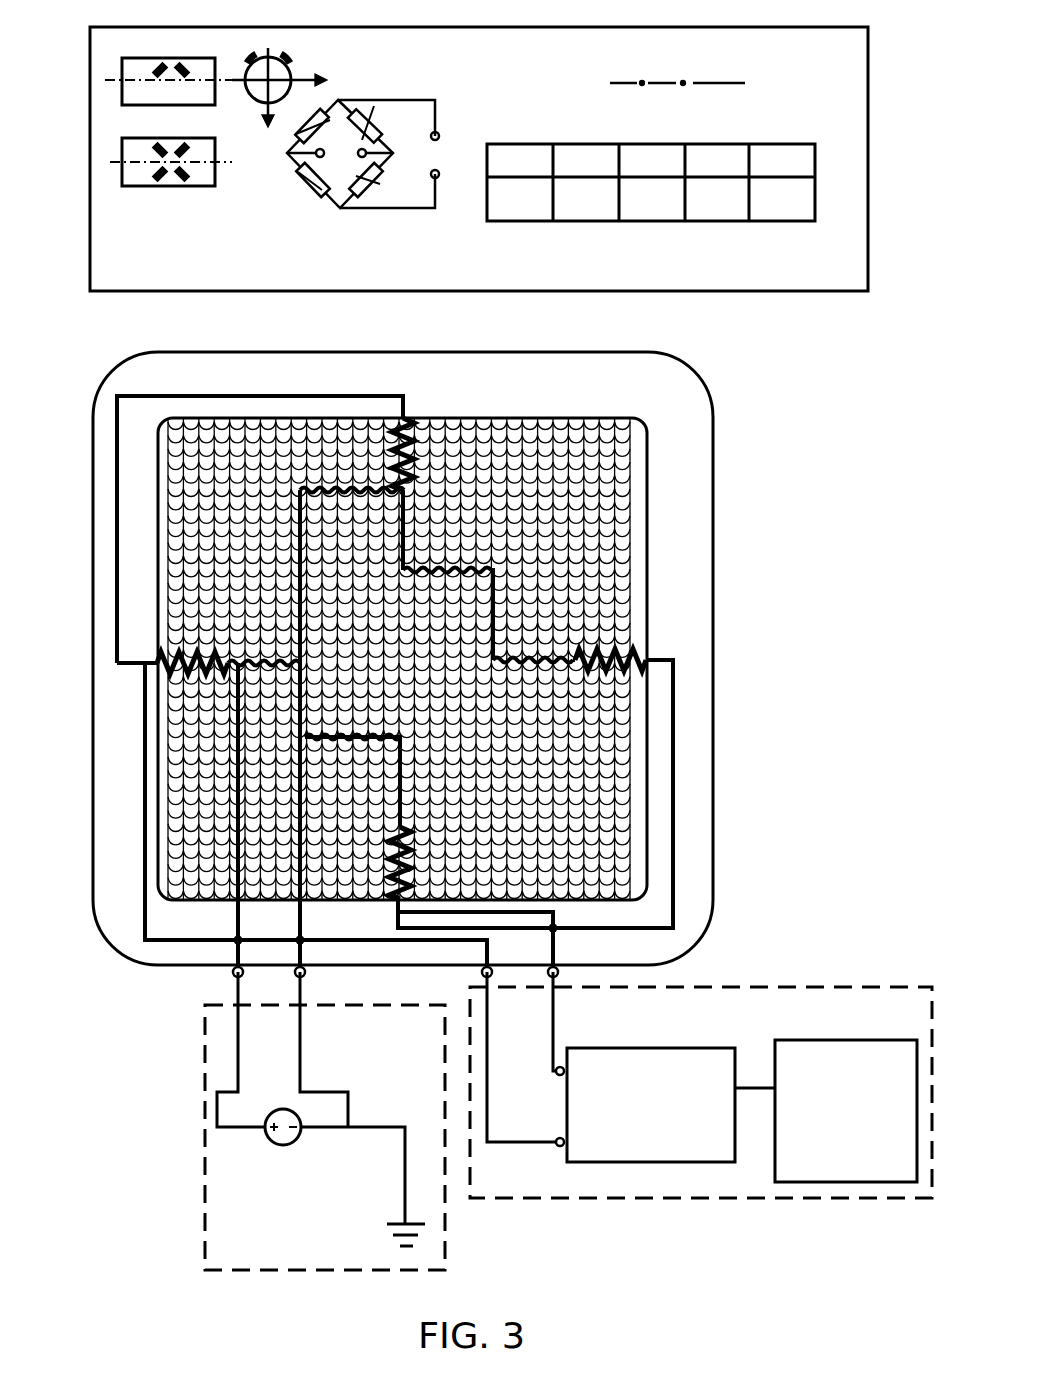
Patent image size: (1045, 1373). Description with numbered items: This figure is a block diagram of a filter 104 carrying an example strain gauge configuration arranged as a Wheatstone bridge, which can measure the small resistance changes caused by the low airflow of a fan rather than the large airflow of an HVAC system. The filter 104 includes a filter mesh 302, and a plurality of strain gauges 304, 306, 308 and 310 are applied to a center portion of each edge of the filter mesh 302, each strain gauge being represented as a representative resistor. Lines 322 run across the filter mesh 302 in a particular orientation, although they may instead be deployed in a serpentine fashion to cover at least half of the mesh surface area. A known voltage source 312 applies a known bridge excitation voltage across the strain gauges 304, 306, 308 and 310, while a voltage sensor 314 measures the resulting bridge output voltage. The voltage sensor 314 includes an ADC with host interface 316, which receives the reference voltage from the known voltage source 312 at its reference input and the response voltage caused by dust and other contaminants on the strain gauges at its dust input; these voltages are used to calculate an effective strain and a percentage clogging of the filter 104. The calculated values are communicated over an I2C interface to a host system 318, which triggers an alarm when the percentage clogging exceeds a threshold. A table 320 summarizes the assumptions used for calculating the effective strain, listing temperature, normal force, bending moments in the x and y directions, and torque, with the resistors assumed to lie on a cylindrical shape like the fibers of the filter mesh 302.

The filter 104 is at (712, 418).
The filter mesh 302 is at (598, 545).
The strain gauge 304 is at (405, 420).
The strain gauge 306 is at (152, 663).
The strain gauge 308 is at (393, 903).
The strain gauge 310 is at (648, 655).
The known voltage source 312 is at (325, 1121).
The voltage sensor 314 is at (701, 1085).
The ADC with host interface 316 is at (671, 1105).
The host system 318 is at (846, 1111).
The table 320 is at (785, 10).
The lines 322 is at (293, 518).